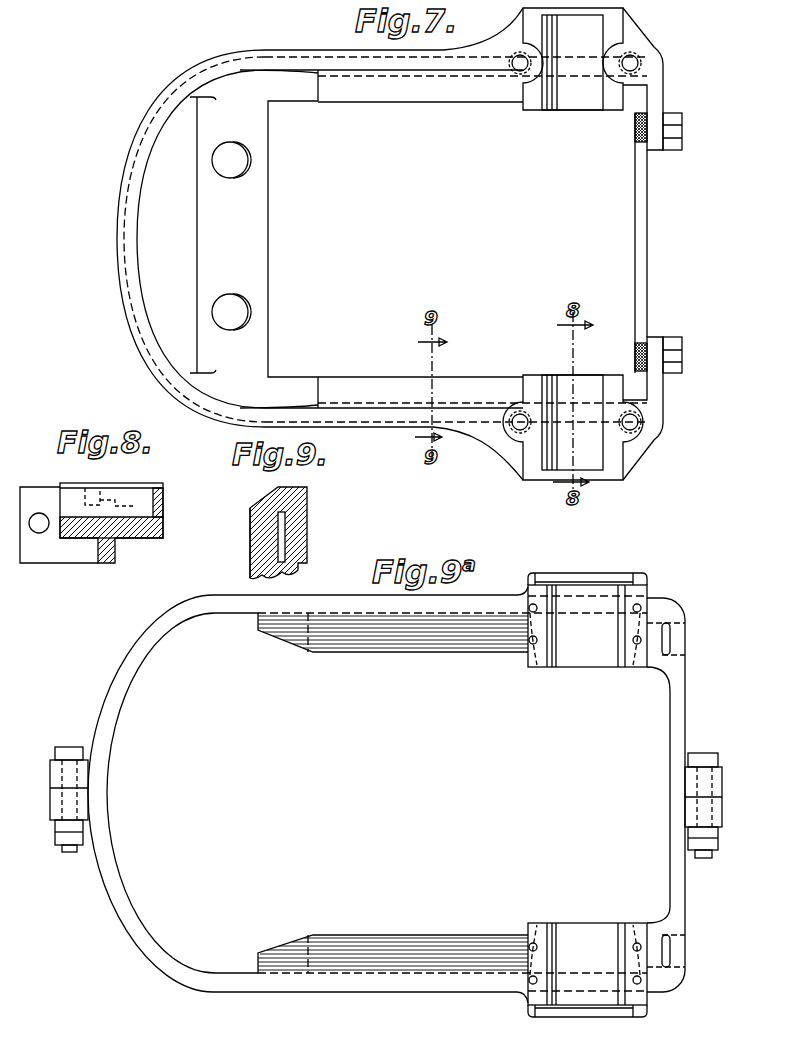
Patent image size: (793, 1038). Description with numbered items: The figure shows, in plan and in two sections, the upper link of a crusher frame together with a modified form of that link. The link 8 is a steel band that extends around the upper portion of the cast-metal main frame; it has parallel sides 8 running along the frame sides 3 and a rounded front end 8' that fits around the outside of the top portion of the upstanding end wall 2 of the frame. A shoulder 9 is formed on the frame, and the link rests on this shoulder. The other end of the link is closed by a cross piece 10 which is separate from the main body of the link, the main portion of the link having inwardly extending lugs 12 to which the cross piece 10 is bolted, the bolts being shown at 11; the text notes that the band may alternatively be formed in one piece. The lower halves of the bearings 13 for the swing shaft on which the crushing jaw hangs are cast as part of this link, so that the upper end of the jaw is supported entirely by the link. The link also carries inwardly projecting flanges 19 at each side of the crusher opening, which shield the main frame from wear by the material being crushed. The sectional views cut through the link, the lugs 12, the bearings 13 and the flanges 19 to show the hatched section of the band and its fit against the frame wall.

In FIG. 7, the upstanding end wall 2 is at (258, 220).
In FIG. 7, the sides 3 is at (302, 93).
In FIG. 9, the sides 3 is at (250, 548).
In FIG. 7, the link 8 is at (330, 244).
In FIG. 8, the link 8 is at (111, 543).
In FIG. 9, the link 8 is at (308, 537).
In FIG. 7, the rounded front end 8' is at (175, 238).
In FIG. 7, the shoulder 9 is at (138, 340).
In FIG. 7, the cross piece 10 is at (642, 233).
In FIG. 7, the bolts 11 is at (675, 115).
In FIG. 7, the inwardly extending lugs 12 is at (657, 80).
In FIG. 8, the inwardly extending lugs 12 is at (55, 548).
In FIG. 7, the lower halves of the bearings 13 is at (563, 98).
In FIG. 8, the lower halves of the bearings 13 is at (150, 510).
In FIG. 7, the inwardly projecting flanges 19 is at (393, 93).
In FIG. 9, the inwardly projecting flanges 19 is at (268, 503).